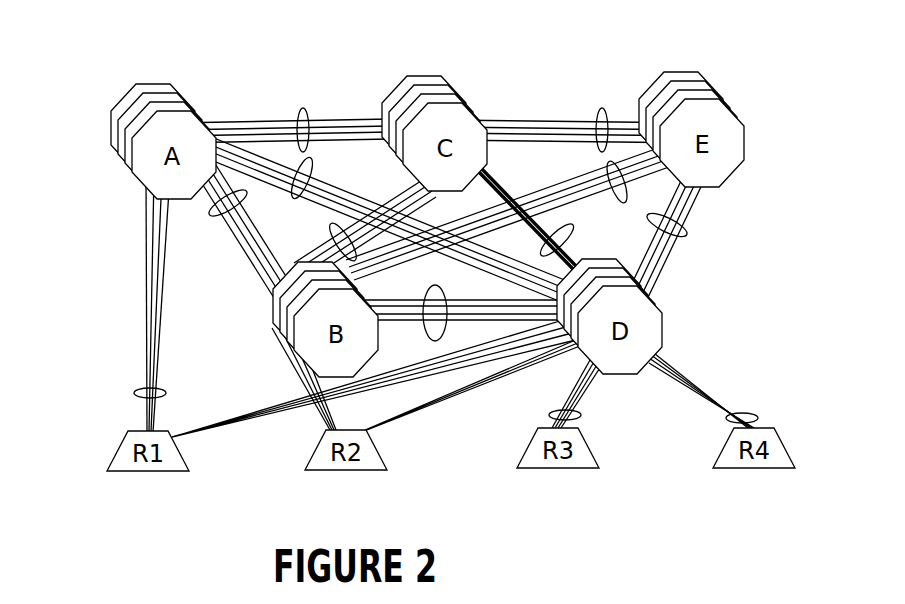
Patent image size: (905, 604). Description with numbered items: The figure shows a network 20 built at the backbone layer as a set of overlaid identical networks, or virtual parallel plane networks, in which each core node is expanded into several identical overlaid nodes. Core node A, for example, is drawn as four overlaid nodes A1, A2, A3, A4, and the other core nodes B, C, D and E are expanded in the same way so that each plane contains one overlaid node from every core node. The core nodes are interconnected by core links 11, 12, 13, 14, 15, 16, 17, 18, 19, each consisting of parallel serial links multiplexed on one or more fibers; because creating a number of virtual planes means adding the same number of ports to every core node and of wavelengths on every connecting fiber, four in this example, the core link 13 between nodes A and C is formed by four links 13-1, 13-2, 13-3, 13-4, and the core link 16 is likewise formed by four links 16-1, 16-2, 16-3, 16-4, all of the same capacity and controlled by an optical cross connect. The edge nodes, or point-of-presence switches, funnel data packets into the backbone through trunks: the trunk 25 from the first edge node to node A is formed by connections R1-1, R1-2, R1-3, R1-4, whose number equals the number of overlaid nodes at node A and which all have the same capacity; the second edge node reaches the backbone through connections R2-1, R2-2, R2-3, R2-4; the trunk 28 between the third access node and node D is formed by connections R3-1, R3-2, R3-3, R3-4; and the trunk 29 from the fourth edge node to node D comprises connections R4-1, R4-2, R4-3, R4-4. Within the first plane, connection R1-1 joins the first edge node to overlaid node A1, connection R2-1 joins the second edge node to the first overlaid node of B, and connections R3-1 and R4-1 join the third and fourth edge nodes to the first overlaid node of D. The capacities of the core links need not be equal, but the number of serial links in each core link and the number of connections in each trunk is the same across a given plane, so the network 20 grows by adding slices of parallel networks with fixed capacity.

The core link 11 is at (213, 207).
The core link 12 is at (310, 172).
The core link 13 is at (294, 85).
The link 13-1 is at (223, 123).
The link 13-2 is at (230, 130).
The link 13-3 is at (240, 136).
The link 13-4 is at (252, 142).
The core link 14 is at (327, 241).
The core link 15 is at (603, 182).
The core link 16 is at (562, 87).
The link 16-1 is at (490, 118).
The link 16-2 is at (500, 125).
The link 16-3 is at (508, 132).
The link 16-4 is at (518, 139).
The core link 17 is at (445, 300).
The core link 18 is at (568, 228).
The core link 19 is at (688, 240).
The network 20 is at (767, 132).
The trunk 25 is at (135, 322).
The trunk 28 is at (575, 435).
The trunk 29 is at (728, 412).
The overlaid node A1 is at (120, 93).
The overlaid node A2 is at (117, 135).
The overlaid node A3 is at (143, 172).
The overlaid node A4 is at (140, 190).
The connection R1-1 is at (147, 240).
The connection R1-2 is at (153, 268).
The connection R1-3 is at (158, 262).
The connection R1-4 is at (197, 346).
The connection R2-1 is at (292, 348).
The connection R2-2 is at (300, 376).
The connection R2-3 is at (302, 407).
The connection R2-4 is at (320, 400).
The connection R3-1 is at (585, 372).
The connection R3-2 is at (578, 413).
The connection R3-3 is at (585, 400).
The connection R3-4 is at (598, 380).
The connection R4-1 is at (705, 392).
The connection R4-2 is at (712, 398).
The connection R4-3 is at (688, 378).
The connection R4-4 is at (672, 368).